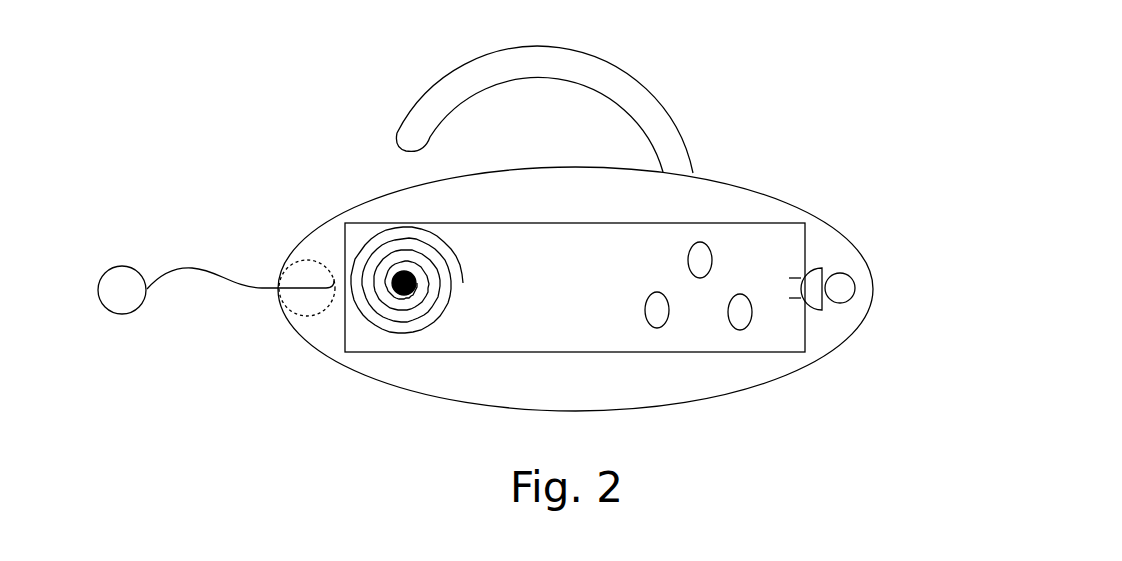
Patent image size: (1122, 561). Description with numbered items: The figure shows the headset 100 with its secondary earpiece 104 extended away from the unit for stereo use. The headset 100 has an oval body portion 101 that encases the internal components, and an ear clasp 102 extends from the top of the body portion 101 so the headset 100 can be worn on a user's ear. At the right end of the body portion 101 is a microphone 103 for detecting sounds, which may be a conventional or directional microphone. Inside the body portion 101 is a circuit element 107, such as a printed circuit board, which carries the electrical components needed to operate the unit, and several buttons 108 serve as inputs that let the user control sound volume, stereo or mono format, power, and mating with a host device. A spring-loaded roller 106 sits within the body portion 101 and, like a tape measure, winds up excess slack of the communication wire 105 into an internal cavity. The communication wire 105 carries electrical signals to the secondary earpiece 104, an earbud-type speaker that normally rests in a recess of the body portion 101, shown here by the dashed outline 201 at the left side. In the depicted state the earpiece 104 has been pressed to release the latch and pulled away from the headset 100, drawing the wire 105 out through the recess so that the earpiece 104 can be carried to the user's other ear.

The headset 100 is at (573, 210).
The body portion 101 is at (382, 195).
The ear clasp 102 is at (637, 73).
The microphone 103 is at (838, 274).
The secondary earpiece 104 is at (118, 266).
The communication wire 105 is at (217, 277).
The spring-loaded roller 106 is at (398, 290).
The circuit element 107 is at (518, 303).
The buttons 108 is at (738, 327).
The cord socket 201 is at (302, 307).